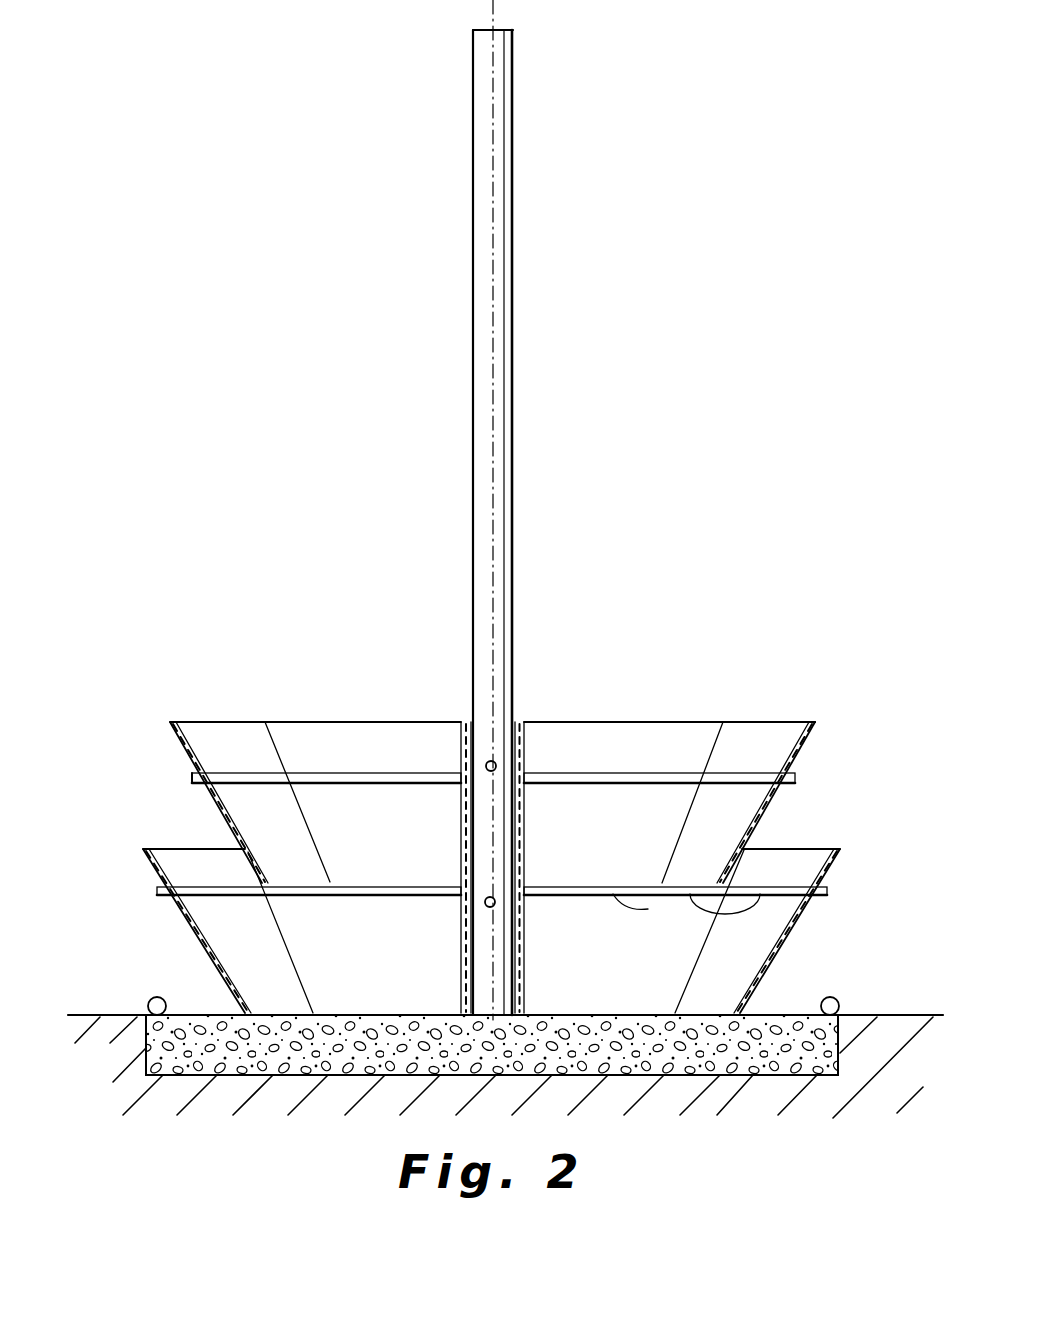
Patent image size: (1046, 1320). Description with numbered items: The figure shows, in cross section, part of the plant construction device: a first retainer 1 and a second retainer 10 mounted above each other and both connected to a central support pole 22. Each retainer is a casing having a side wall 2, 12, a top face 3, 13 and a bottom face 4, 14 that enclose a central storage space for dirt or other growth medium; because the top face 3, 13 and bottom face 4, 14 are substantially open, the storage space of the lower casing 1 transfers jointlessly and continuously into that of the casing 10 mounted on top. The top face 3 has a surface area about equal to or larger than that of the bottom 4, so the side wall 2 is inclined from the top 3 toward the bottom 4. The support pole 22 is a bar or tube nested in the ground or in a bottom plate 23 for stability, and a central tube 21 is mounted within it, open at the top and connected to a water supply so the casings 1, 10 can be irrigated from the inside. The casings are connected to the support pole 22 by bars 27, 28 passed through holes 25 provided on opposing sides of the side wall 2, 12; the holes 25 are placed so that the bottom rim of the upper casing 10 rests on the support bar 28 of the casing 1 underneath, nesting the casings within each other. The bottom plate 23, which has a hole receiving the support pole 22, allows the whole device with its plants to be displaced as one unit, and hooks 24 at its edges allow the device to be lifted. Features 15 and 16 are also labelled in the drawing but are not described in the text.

The first retainer 1 is at (516, 896).
The side wall 2 is at (835, 873).
The top face 3 is at (783, 848).
The bottom face 4 is at (681, 1012).
The second retainer 10 is at (542, 756).
The side wall 12 is at (810, 733).
The top face 13 is at (682, 722).
The bottom face 14 is at (760, 891).
The rim of upper basin 15 is at (745, 722).
The opening 16 is at (646, 910).
The central tube 21 is at (505, 372).
The support pole 22 is at (458, 733).
The bottom plate 23 is at (87, 1082).
The hook 24 is at (150, 997).
The holes 25 is at (207, 786).
The bar 27 is at (797, 776).
The support bar 28 is at (497, 763).